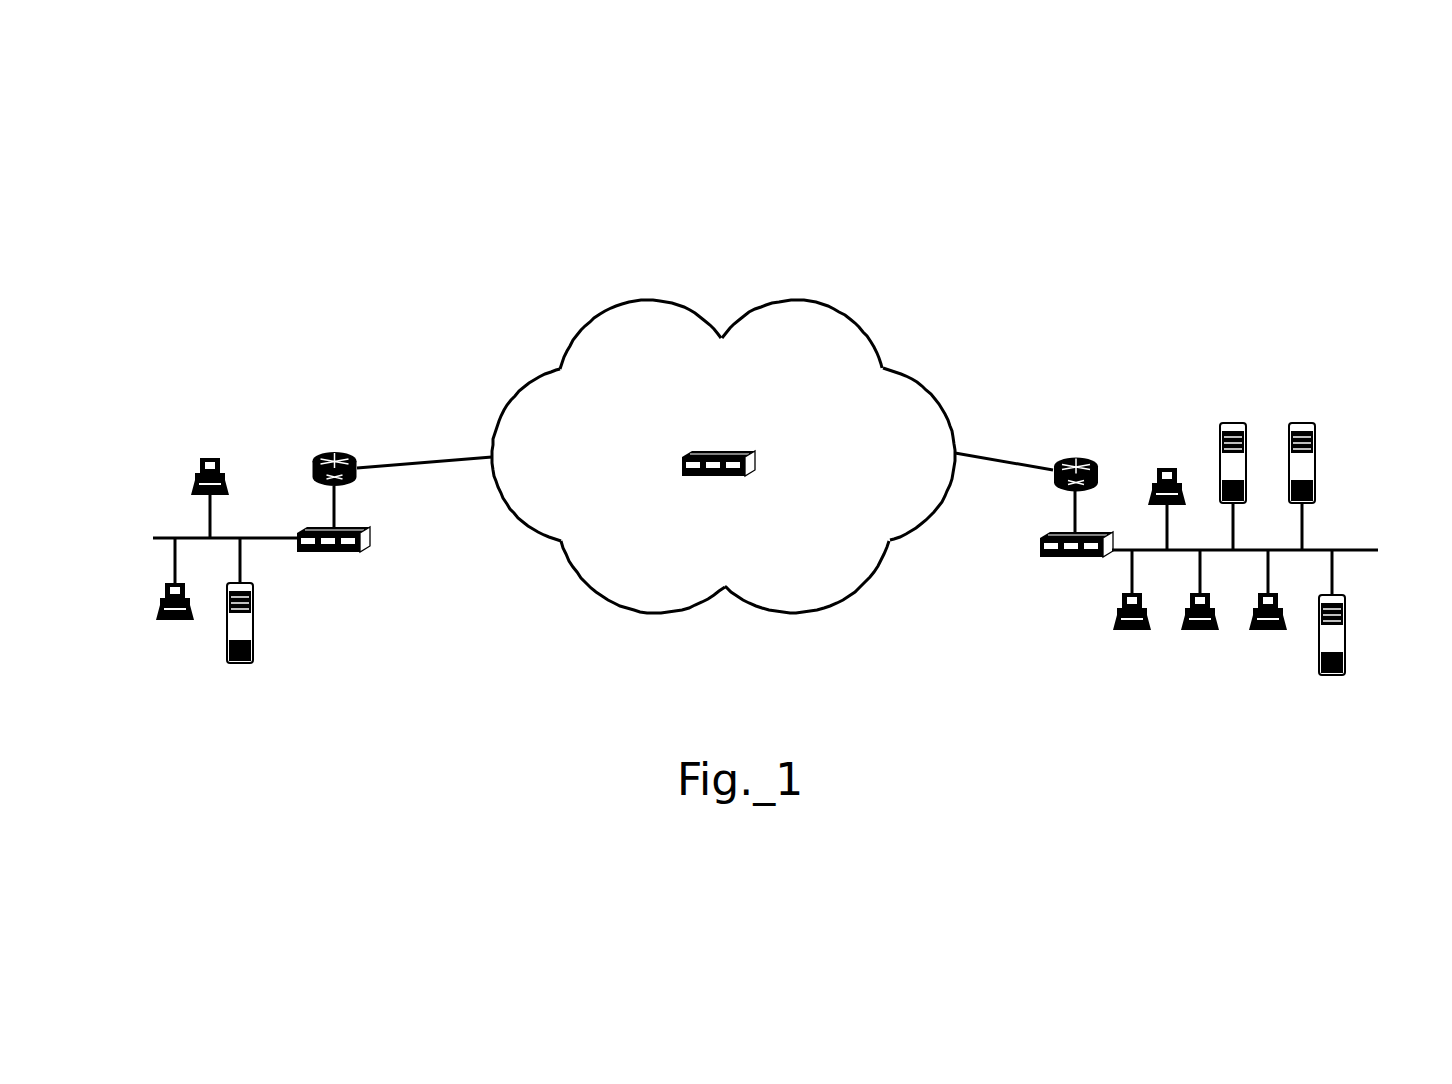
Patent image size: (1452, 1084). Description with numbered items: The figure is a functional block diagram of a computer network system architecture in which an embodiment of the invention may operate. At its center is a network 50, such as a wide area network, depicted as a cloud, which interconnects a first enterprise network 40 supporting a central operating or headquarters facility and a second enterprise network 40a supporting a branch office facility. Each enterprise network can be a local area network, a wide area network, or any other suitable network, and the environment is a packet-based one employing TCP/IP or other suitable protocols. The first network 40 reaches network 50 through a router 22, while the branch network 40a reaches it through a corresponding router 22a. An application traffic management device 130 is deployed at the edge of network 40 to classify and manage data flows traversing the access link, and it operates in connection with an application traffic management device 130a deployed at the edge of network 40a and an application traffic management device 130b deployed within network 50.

The network 50 is at (833, 312).
The application traffic management device 130b is at (718, 478).
The router 22a is at (334, 452).
The application traffic management device 130a is at (335, 553).
The second enterprise network 40a is at (175, 645).
The router 22 is at (1075, 458).
The application traffic management device 130 is at (1057, 558).
The first enterprise network 40 is at (1378, 590).